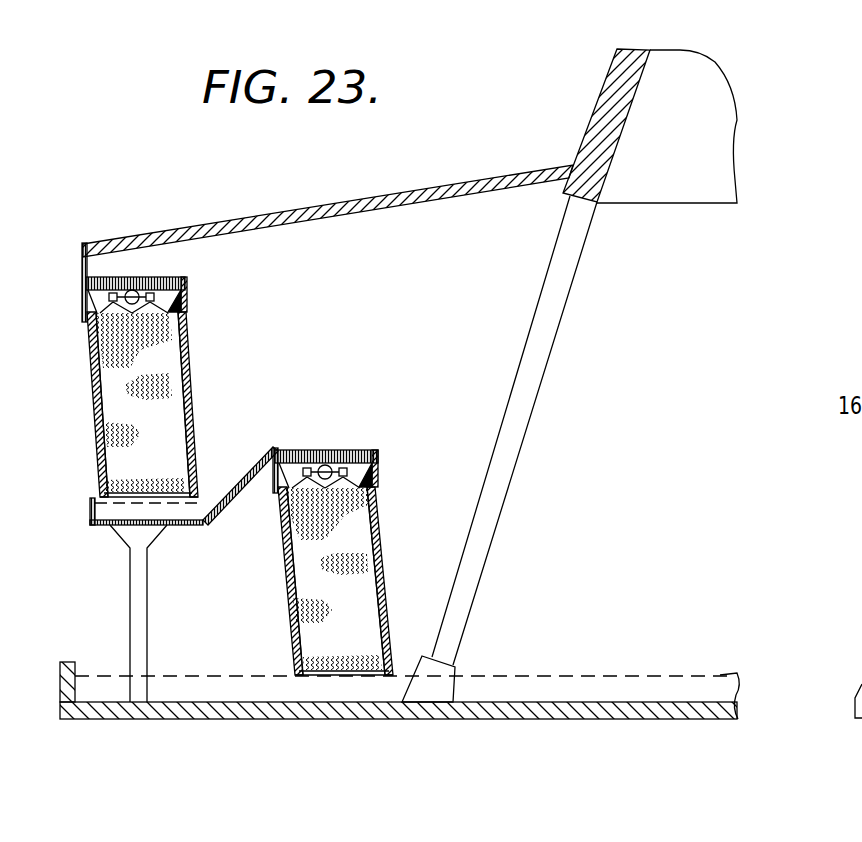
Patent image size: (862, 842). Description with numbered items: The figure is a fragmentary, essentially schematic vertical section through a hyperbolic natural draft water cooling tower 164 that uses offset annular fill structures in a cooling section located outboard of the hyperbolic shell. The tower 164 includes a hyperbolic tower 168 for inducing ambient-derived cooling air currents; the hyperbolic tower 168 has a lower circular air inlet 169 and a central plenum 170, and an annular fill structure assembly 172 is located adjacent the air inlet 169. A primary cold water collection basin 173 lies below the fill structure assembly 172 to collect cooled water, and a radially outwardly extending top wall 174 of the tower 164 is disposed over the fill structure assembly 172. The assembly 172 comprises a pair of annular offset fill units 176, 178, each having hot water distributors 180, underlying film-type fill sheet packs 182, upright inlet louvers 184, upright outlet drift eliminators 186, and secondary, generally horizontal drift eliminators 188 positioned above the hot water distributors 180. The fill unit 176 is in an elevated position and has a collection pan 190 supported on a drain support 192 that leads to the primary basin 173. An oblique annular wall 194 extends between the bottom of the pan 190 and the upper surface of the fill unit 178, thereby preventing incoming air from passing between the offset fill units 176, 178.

The tower 164 is at (756, 67).
The hyperbolic tower 168 is at (600, 93).
The lower circular air inlet 169 is at (585, 320).
The central plenum 170 is at (405, 555).
The annular fill structure assembly 172 is at (355, 356).
The primary cold water collection basin 173 is at (520, 708).
The top wall 174 is at (343, 202).
The fill unit 176 is at (241, 460).
The fill unit 178 is at (387, 529).
The hot water distributors 180 is at (200, 296).
The film-type fill sheet packs 182 is at (167, 405).
The upright inlet louvers 184 is at (92, 388).
The upright outlet drift eliminators 186 is at (190, 345).
The secondary drift eliminators 188 is at (150, 278).
The collection pan 190 is at (178, 528).
The drain support 192 is at (135, 610).
The oblique annular wall 194 is at (242, 478).